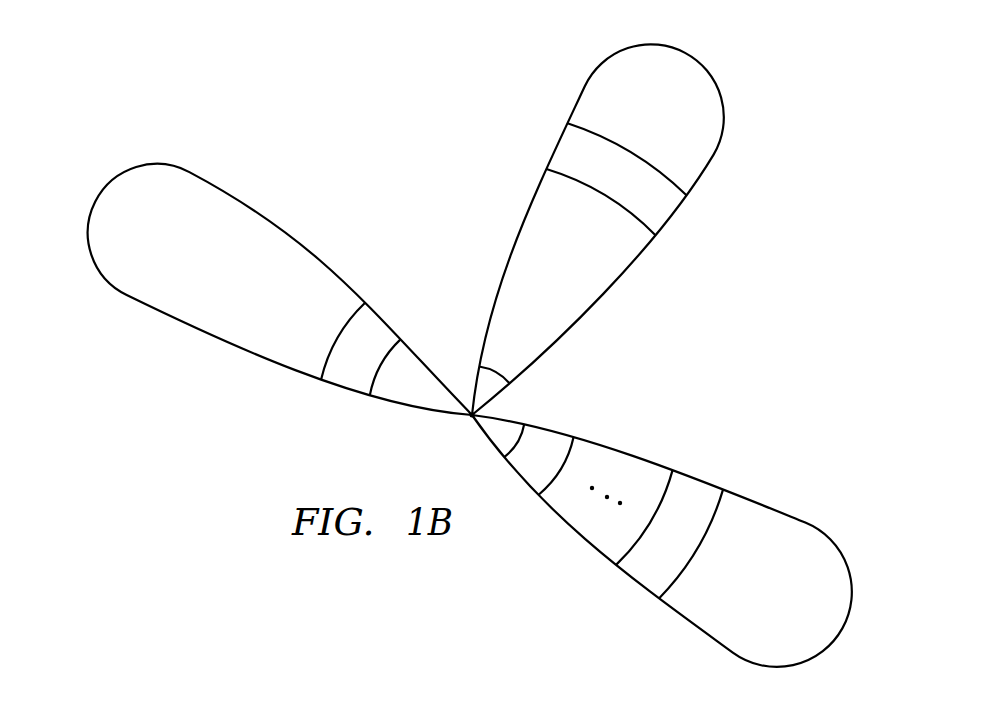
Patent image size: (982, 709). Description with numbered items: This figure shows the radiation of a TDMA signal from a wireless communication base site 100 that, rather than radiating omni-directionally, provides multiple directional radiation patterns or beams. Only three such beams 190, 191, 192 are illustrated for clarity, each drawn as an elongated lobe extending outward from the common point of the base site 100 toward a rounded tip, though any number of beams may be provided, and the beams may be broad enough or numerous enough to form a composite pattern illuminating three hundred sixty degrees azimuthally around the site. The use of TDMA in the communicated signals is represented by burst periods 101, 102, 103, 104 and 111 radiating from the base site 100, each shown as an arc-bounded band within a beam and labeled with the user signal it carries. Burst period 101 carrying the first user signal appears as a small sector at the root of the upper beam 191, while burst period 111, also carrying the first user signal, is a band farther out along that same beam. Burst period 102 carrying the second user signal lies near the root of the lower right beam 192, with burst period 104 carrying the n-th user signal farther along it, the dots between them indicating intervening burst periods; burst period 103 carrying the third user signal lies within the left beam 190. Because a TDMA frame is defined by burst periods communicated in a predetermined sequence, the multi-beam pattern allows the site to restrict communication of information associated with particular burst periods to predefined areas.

The base site 100 is at (470, 420).
The burst period 101 is at (485, 388).
The burst period 102 is at (530, 473).
The burst period 103 is at (348, 380).
The burst period 104 is at (697, 487).
The burst period 111 is at (663, 212).
The beam 190 is at (245, 347).
The beam 191 is at (702, 148).
The beam 192 is at (770, 522).